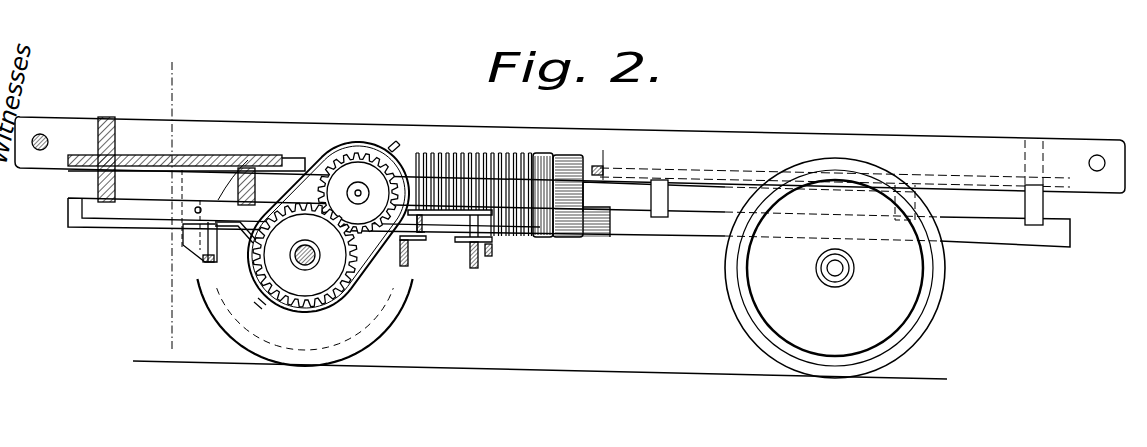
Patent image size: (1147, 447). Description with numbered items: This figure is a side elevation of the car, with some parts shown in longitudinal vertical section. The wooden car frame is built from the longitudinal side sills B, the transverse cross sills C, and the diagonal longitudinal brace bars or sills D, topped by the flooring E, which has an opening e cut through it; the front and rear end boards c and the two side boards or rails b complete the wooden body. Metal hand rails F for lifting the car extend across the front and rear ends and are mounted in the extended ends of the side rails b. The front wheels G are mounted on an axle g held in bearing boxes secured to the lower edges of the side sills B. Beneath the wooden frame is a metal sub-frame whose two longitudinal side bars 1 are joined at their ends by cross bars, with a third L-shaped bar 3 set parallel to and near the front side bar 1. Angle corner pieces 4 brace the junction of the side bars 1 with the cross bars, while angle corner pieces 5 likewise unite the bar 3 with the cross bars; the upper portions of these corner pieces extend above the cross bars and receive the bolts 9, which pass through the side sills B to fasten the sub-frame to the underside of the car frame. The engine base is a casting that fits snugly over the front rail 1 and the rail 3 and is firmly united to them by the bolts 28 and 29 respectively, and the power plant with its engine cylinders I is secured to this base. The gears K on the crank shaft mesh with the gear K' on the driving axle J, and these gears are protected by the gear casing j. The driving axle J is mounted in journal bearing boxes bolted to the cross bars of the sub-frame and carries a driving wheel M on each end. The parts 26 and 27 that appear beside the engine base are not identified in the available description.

The angle corner pieces 5 is at (160, 95).
The side boards or rails b is at (570, 155).
The longitudinal side sills B is at (80, 227).
The diagonal longitudinal brace bars or sills D is at (311, 212).
The flooring E is at (282, 162).
The opening e is at (298, 158).
The transverse cross sills C is at (96, 184).
The metal rods or hand rails F is at (46, 136).
The front and rear end boards c is at (96, 132).
The bolts 9 is at (212, 205).
The angle corner pieces 4 is at (190, 246).
The longitudinal side bars 1 is at (205, 262).
The driving wheel M is at (262, 352).
The driving axle J is at (293, 260).
The gears K is at (358, 164).
The intermeshing gear K' is at (312, 263).
The gear casing j is at (346, 312).
The bolt 27 is at (382, 274).
The engine cylinders I is at (490, 152).
The third L-shaped bar 3 is at (413, 268).
The bolts 29 is at (420, 250).
The motor hanger 26 is at (490, 258).
The bolts 28 is at (495, 250).
The front wheels G is at (946, 300).
The axle g is at (830, 274).